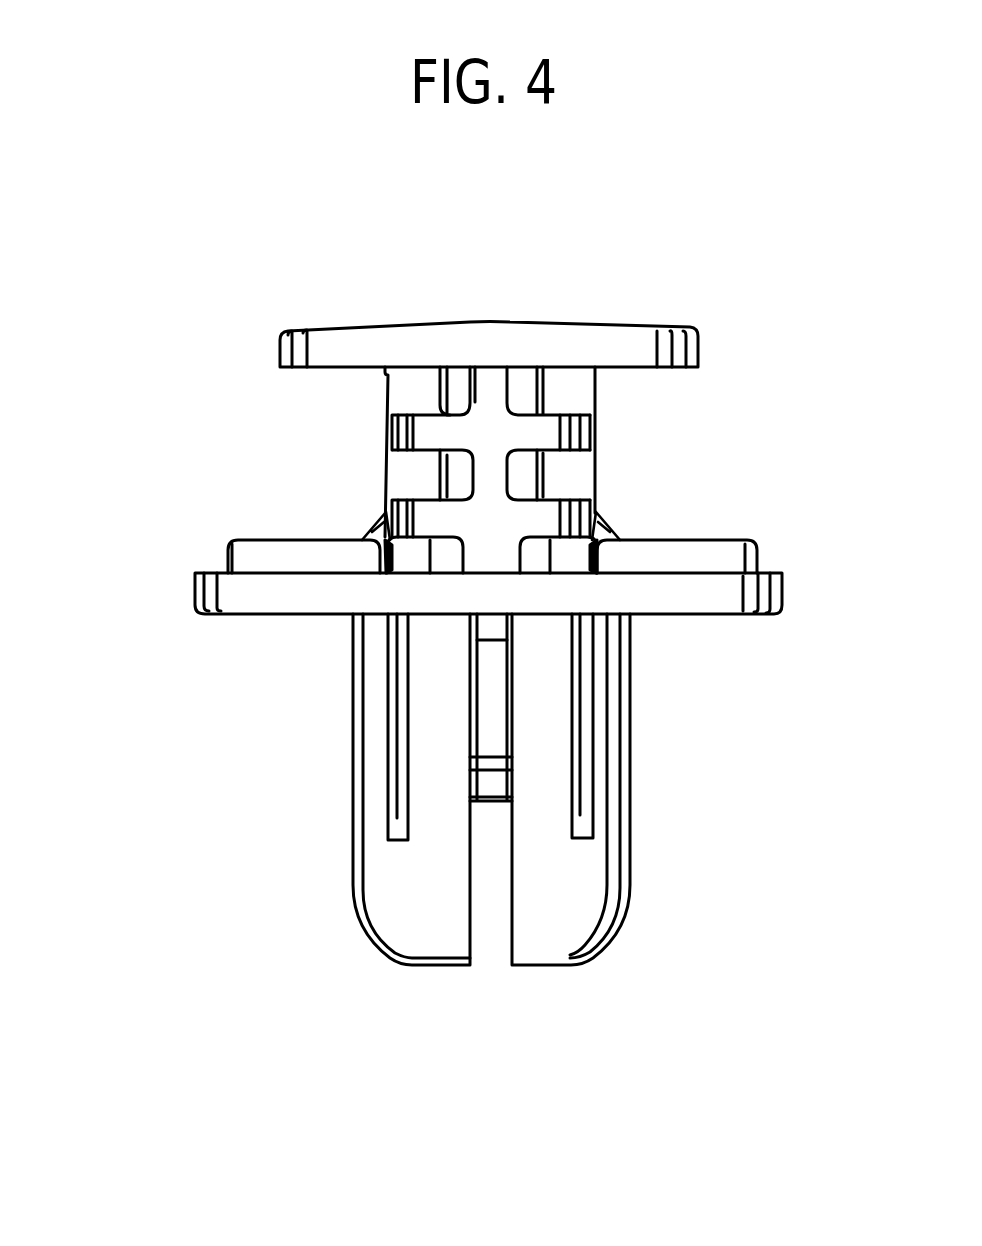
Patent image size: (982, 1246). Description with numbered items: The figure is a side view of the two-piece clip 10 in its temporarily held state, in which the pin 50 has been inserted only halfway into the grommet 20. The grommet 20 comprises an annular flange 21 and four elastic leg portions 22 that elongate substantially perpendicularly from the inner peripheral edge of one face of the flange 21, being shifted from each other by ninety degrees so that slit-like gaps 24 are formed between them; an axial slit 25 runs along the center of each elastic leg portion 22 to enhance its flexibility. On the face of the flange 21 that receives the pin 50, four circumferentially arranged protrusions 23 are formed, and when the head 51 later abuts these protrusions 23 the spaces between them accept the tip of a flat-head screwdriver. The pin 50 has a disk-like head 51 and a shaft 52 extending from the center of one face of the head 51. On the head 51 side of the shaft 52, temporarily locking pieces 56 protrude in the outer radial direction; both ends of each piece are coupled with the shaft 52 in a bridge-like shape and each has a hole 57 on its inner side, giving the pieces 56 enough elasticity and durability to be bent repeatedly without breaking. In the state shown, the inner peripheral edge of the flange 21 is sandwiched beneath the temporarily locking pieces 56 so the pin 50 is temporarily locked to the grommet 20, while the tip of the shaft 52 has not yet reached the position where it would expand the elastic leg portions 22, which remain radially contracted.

The two-piece clip 10 is at (308, 303).
The grommet 20 is at (314, 770).
The annular flange 21 is at (762, 592).
The elastic leg portion 22 is at (388, 912).
The protrusion 23 is at (238, 555).
The slit-like gap 24 is at (489, 945).
The axial slit 25 is at (402, 820).
The pin 50 is at (647, 430).
The head 51 is at (635, 338).
The shaft 52 is at (410, 434).
The temporarily locking piece 56 is at (383, 528).
The hole 57 is at (407, 562).